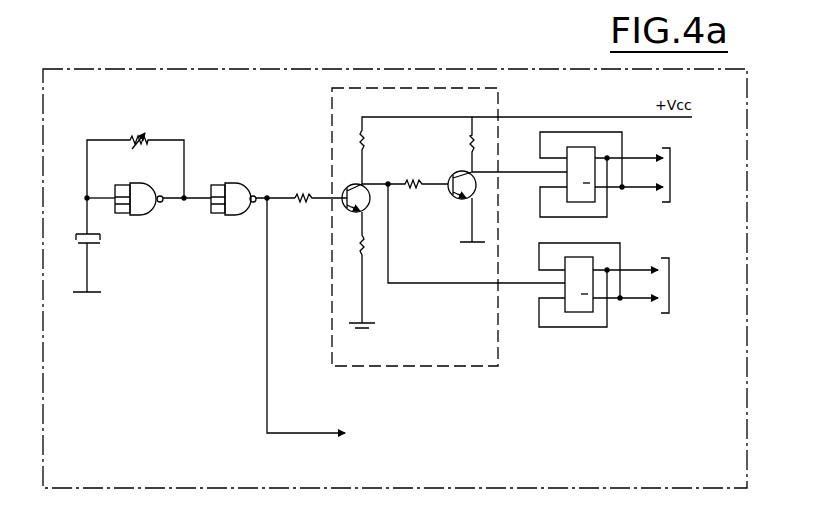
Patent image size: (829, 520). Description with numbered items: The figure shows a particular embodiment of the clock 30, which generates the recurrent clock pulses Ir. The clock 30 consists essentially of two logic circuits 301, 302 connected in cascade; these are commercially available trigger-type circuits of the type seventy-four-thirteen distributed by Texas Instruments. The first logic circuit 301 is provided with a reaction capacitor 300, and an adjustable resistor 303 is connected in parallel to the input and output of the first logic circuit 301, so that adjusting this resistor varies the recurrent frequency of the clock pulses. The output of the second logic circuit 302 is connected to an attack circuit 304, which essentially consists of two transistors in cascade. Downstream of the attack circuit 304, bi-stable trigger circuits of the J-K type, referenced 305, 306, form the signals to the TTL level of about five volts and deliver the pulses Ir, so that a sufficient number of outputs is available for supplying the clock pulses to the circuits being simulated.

The clock 30 is at (729, 358).
The reaction capacitor 300 is at (97, 241).
The first logic circuit 301 is at (150, 215).
The second logic circuit 302 is at (242, 215).
The adjustable resistor 303 is at (150, 131).
The attack circuit 304 is at (331, 352).
The bi-stable trigger circuit 305 is at (582, 202).
The bi-stable trigger circuit 306 is at (580, 312).